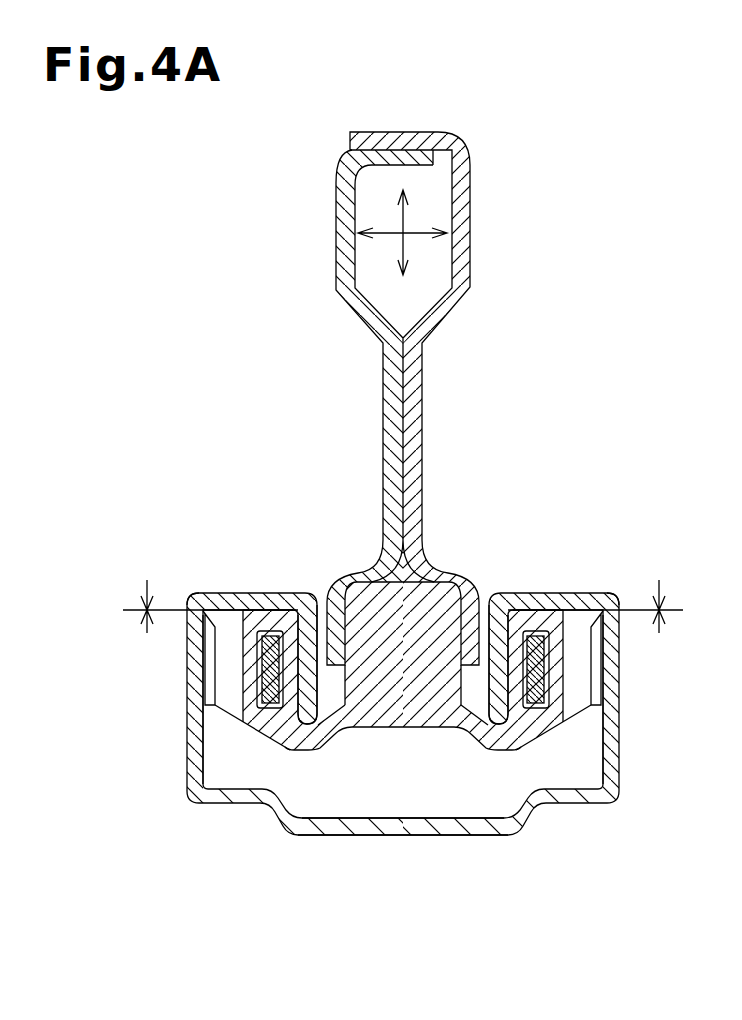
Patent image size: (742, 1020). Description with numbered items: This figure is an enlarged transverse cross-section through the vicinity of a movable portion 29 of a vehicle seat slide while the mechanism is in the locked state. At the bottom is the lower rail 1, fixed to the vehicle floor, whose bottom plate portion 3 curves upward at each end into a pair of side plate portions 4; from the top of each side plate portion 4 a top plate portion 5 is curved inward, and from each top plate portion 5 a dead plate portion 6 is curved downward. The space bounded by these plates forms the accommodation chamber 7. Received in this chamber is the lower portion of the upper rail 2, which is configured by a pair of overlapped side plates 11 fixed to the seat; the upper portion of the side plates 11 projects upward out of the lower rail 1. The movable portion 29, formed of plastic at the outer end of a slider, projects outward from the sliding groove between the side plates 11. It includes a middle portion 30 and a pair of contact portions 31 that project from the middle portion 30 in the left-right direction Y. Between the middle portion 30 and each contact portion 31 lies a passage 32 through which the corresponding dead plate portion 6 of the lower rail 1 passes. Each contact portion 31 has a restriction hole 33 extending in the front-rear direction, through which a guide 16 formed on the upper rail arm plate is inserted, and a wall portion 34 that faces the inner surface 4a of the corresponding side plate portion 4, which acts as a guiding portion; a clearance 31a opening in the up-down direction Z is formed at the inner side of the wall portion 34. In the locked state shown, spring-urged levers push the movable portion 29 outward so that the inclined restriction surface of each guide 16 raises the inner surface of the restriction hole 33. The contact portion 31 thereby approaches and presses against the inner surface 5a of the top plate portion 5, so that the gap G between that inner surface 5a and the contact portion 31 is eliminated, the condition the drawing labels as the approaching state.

The lower rail 1 is at (439, 856).
The upper rail 2 is at (399, 367).
The bottom plate portion 3 is at (392, 830).
The side plate portion 4 is at (189, 756).
The inner surface 4a is at (208, 718).
The top plate portion 5 is at (232, 605).
The inner surface 5a is at (207, 600).
The dead plate portion 6 is at (313, 612).
The accommodation chamber 7 is at (362, 806).
The side plate 11 is at (318, 214).
The guide 16 is at (273, 697).
The movable portion 29 is at (424, 616).
The middle portion 30 is at (403, 717).
The contact portion 31 is at (270, 614).
The clearance 31a is at (226, 674).
The passage 32 is at (328, 703).
The restriction hole 33 is at (255, 668).
The wall portion 34 is at (208, 653).
The gap G is at (403, 591).
The up-down direction Z is at (400, 216).
The left-right direction Y is at (420, 230).